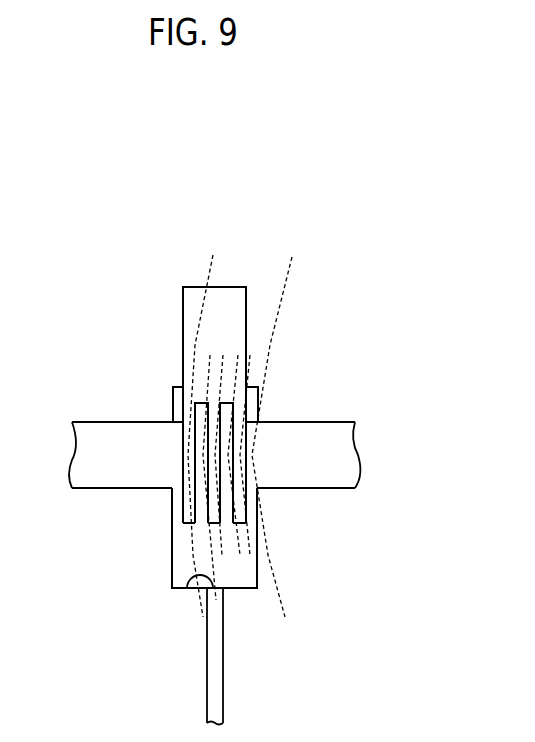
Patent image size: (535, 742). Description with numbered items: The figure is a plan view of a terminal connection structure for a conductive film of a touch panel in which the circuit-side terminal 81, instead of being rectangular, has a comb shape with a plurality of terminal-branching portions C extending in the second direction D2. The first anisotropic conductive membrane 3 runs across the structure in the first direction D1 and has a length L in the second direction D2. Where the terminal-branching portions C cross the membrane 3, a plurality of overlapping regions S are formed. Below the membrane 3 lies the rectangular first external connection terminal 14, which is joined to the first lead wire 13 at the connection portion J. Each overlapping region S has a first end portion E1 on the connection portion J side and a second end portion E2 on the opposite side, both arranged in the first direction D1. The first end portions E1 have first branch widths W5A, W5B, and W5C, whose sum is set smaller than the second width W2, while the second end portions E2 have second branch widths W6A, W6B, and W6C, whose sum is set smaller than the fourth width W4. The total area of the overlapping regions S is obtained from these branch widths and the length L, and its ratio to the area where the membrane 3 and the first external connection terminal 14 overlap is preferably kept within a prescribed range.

The first anisotropic conductive membrane 3 is at (322, 422).
The circuit-side terminal 81 is at (181, 327).
The first external connection terminal 14 is at (172, 570).
The first lead wire 13 is at (205, 663).
The connection portion J is at (187, 590).
The overlapping region S is at (183, 435).
The terminal-branching portion C is at (185, 477).
The first end portion E1 is at (190, 477).
The second end portion E2 is at (190, 423).
The first direction D1 is at (297, 209).
The second direction D2 is at (48, 402).
The length of the first anisotropic conductive membrane L is at (358, 422).
The fourth width W4 is at (213, 258).
The second width W2 is at (203, 617).
The second branch width W6A is at (240, 369).
The second branch width W6B is at (185, 356).
The second branch width W6C is at (222, 342).
The first branch width W5A is at (242, 540).
The first branch width W5B is at (183, 555).
The first branch width W5C is at (222, 568).